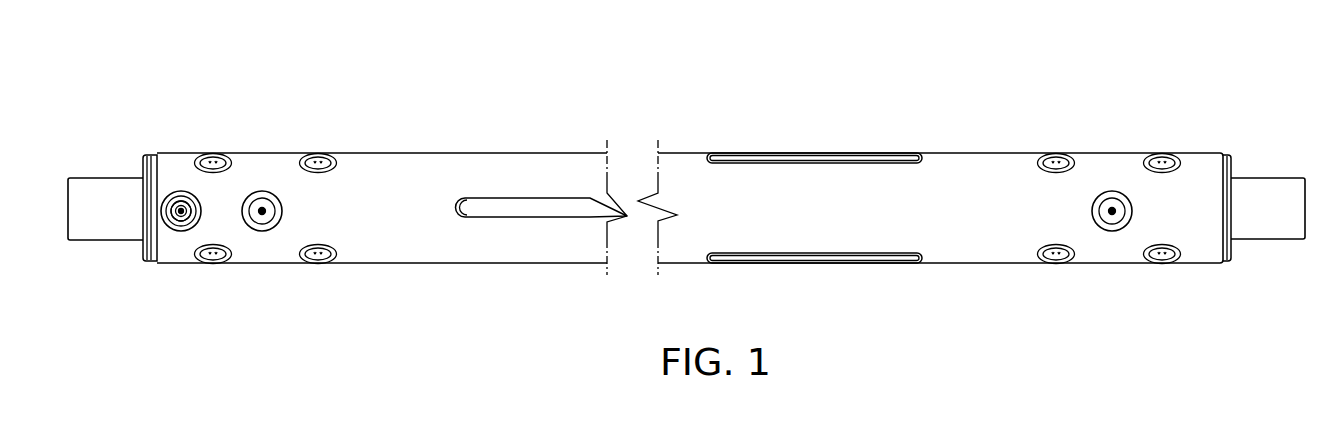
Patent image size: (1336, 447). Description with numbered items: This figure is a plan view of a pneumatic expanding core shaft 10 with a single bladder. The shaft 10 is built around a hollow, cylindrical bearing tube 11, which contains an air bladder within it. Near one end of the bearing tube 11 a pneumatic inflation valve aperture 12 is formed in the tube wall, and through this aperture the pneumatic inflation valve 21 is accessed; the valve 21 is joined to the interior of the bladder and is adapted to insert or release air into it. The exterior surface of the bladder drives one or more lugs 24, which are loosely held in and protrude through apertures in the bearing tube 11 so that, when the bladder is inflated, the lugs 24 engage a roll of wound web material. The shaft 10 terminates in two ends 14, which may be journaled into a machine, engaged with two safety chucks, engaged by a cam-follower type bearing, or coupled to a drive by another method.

The pneumatic expanding core shaft 10 is at (1222, 77).
The bearing tube 11 is at (420, 245).
The pneumatic inflation valve aperture 12 is at (181, 192).
The ends 14 is at (106, 176).
The pneumatic inflation valve 21 is at (180, 218).
The lugs 24 is at (500, 205).